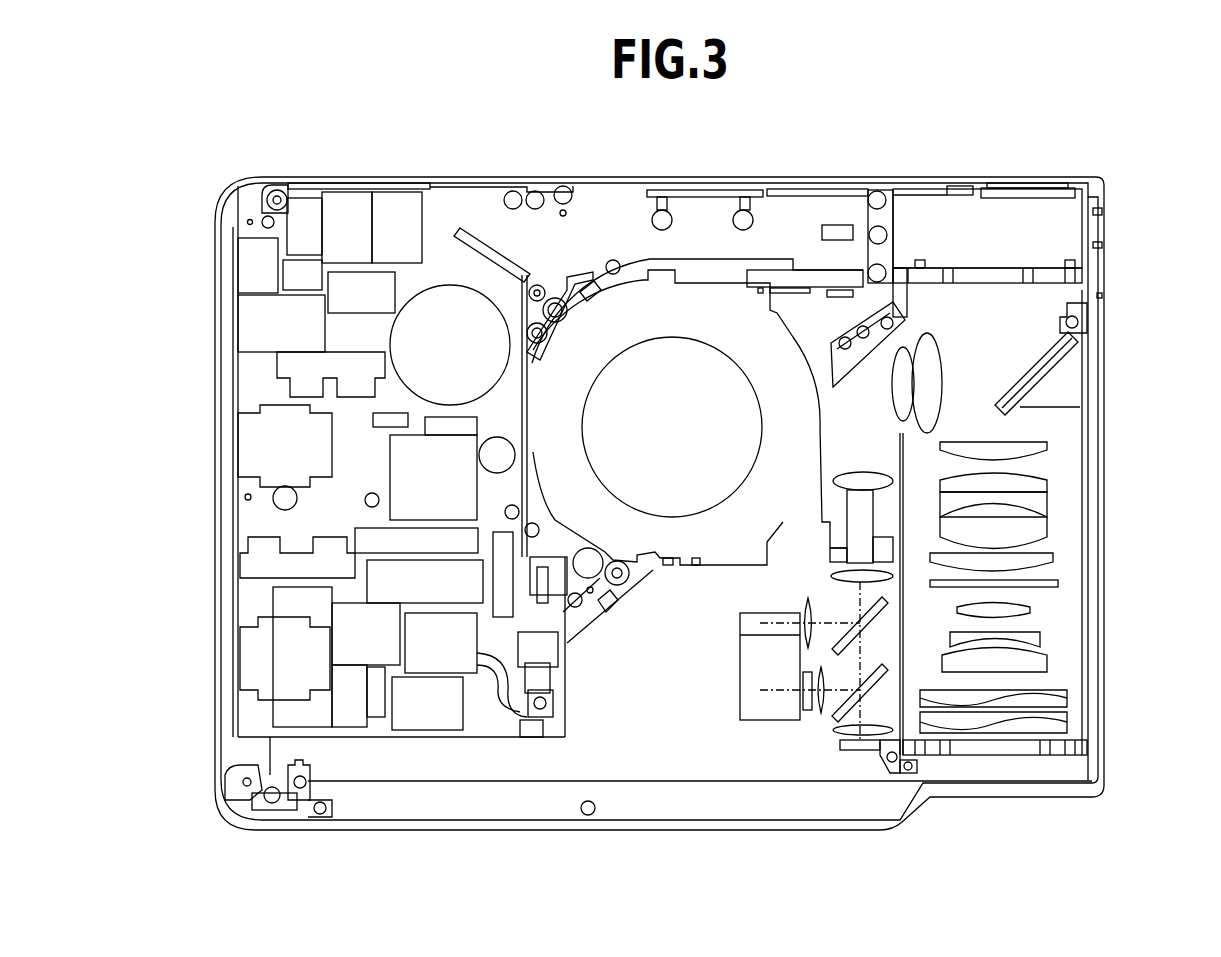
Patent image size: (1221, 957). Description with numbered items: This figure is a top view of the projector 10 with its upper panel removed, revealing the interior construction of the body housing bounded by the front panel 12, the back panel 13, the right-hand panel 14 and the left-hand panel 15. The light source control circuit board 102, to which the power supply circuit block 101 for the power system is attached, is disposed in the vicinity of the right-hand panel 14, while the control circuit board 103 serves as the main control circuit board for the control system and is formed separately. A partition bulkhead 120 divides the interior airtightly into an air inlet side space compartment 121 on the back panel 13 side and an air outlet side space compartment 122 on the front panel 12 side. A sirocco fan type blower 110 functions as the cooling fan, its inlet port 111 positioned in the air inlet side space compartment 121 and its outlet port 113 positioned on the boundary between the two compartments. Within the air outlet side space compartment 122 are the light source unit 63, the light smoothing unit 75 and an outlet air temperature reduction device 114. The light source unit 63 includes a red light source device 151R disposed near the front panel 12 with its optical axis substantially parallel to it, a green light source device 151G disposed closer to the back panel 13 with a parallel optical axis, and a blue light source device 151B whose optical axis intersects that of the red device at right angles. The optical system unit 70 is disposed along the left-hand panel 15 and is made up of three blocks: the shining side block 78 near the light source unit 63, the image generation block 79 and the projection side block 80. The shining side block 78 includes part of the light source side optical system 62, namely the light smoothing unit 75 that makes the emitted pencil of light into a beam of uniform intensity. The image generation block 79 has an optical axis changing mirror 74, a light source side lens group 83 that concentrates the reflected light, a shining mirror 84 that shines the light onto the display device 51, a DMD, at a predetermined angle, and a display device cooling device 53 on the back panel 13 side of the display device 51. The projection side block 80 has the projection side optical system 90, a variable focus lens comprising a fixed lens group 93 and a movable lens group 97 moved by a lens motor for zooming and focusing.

The projector 10 is at (1118, 172).
The front panel 12 is at (602, 830).
The back panel 13 is at (448, 185).
The right-hand panel 14 is at (225, 540).
The left-hand panel 15 is at (1103, 310).
The display device 51 is at (987, 273).
The display device cooling device 53 is at (920, 232).
The light source side optical system 62 is at (881, 430).
The light source unit 63 is at (790, 748).
The optical system unit 70 is at (1077, 433).
The optical axis changing mirror 74 is at (845, 335).
The light smoothing unit 75 is at (865, 538).
The shining side block 78 is at (890, 548).
The image generation block 79 is at (1041, 273).
The projection side block 80 is at (1084, 678).
The light source side lens group 83 is at (955, 389).
The shining mirror 84 is at (1057, 351).
The projection side optical system 90 is at (1065, 466).
The fixed lens group 93 is at (1050, 505).
The movable lens group 97 is at (1050, 643).
The power supply circuit block 101 is at (262, 330).
The light source control circuit board 102 is at (255, 597).
The control circuit board 103 is at (553, 237).
The sirocco fan type blower 110 is at (633, 307).
The inlet port 111 is at (700, 397).
The outlet port 113 is at (705, 575).
The outlet air temperature reduction device 114 is at (535, 800).
The partition bulkhead 120 is at (358, 752).
The air inlet side space compartment 121 is at (604, 240).
The air outlet side space compartment 122 is at (420, 758).
The green light source device 151G is at (750, 728).
The red light source device 151R is at (823, 722).
The blue light source device 151B is at (864, 762).